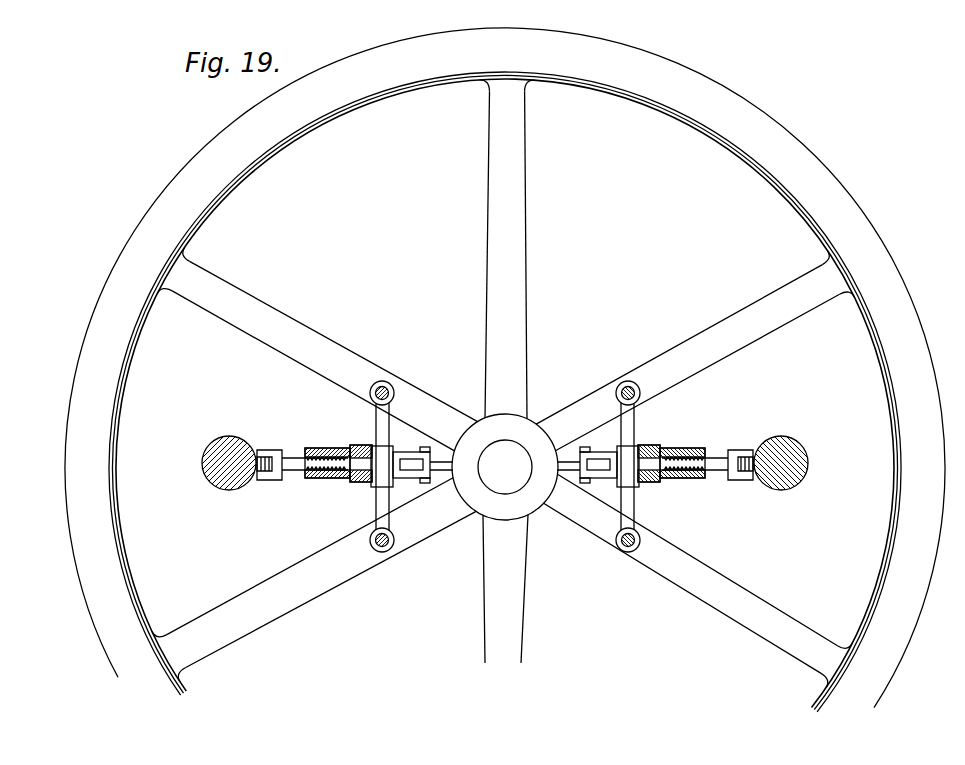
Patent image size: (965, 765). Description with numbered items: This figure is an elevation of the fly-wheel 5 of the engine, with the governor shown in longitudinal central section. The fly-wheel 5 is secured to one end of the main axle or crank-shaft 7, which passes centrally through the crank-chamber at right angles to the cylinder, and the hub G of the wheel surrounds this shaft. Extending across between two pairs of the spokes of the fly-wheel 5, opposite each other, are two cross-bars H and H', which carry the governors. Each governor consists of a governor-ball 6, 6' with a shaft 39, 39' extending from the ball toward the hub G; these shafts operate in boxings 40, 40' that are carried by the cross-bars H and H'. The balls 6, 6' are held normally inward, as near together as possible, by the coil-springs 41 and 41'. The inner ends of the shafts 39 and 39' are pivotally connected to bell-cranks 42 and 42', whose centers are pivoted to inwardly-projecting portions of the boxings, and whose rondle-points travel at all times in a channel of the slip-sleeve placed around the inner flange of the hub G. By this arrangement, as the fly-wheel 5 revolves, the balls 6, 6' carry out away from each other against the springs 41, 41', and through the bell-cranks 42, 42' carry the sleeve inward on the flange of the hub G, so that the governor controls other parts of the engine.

The fly-wheel 5 is at (102, 646).
The hub G is at (518, 428).
The main axle or crank-shaft 7 is at (505, 467).
The governor-ball 6 is at (242, 463).
The shaft 39 is at (313, 444).
The boxing 40 is at (334, 448).
The coil-spring 41 is at (355, 481).
The bell-crank 42 is at (424, 480).
The cross-bar H is at (394, 466).
The governor-ball 6' is at (768, 463).
The shaft 39' is at (700, 442).
The boxing 40' is at (680, 448).
The coil-spring 41' is at (664, 483).
The bell-crank 42' is at (586, 482).
The cross-bar H' is at (613, 466).